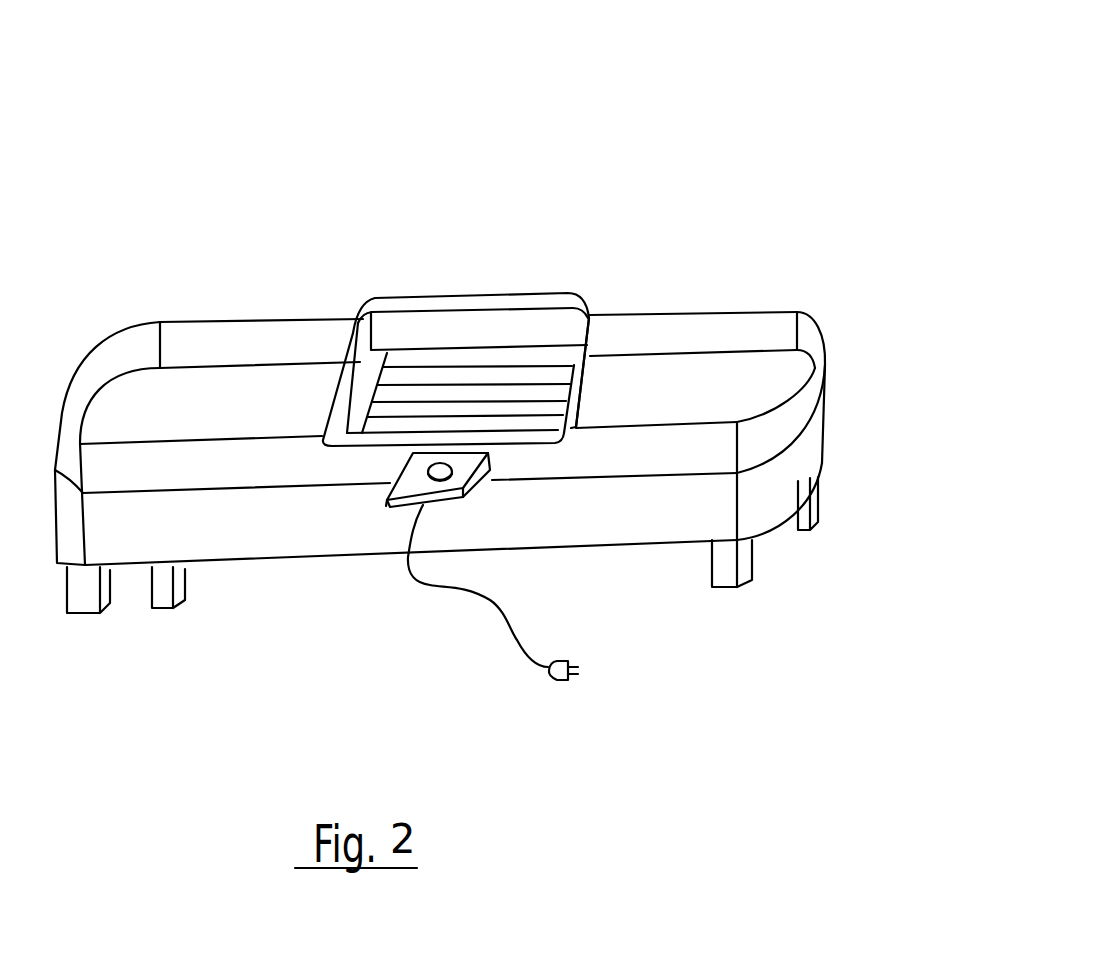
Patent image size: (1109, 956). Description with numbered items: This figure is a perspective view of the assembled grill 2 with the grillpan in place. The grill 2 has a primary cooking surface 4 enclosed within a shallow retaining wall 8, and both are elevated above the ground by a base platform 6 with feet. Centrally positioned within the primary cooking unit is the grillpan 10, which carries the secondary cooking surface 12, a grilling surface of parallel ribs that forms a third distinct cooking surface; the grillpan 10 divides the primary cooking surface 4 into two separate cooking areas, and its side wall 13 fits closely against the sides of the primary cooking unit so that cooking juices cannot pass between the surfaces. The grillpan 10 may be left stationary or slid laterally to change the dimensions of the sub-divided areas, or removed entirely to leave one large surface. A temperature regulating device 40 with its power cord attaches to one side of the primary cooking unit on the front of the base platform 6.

The grill 2 is at (802, 147).
The primary cooking surface 4 is at (720, 380).
The base platform 6 is at (257, 533).
The shallow retaining wall 8 is at (222, 342).
The grillpan 10 is at (358, 365).
The secondary cooking surface 12 is at (453, 372).
The tray side wall 13 is at (593, 342).
The temperature regulating device 40 is at (395, 500).